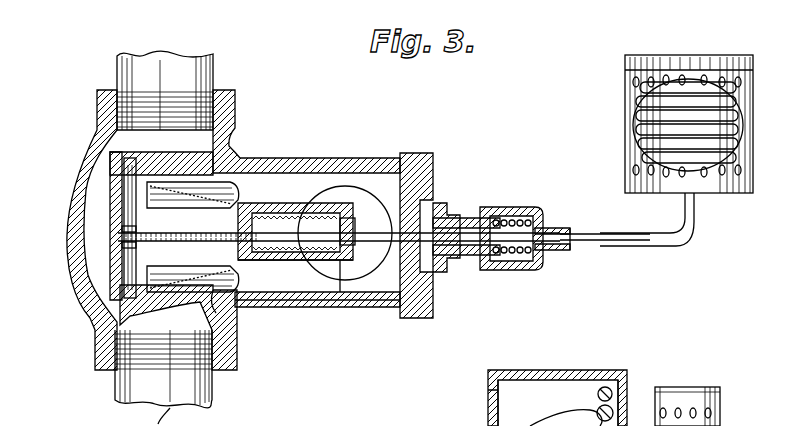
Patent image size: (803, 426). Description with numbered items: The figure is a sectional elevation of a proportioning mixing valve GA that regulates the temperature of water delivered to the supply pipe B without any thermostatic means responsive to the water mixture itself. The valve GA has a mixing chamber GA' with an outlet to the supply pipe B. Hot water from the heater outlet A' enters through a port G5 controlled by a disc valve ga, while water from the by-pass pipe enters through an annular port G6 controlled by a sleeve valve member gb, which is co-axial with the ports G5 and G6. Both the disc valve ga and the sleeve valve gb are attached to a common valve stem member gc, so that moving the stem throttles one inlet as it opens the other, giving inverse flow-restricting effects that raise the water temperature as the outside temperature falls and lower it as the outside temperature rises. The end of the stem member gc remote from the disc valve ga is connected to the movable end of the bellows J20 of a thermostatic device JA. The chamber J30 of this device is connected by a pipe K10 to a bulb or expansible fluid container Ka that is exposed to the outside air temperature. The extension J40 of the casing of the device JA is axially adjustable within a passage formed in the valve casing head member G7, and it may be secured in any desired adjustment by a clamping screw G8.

The heater outlet A' is at (165, 75).
The supply pipe B is at (350, 196).
The valve stem member gc is at (266, 222).
The valve casing head member G7 is at (425, 180).
The pipe K10 is at (465, 236).
The clamping screw G8 is at (515, 207).
The bulb or expansible fluid container Ka is at (634, 123).
The port G5 is at (122, 205).
The disc valve ga is at (134, 258).
The sleeve valve member gb is at (212, 291).
The thermostatic device JA is at (284, 260).
The chamber J30 is at (355, 245).
The valve GA is at (317, 327).
The mixing chamber GA' is at (295, 302).
The spring housing rib J20 is at (350, 302).
The extension J40 is at (560, 250).
The annular port G6 is at (243, 322).